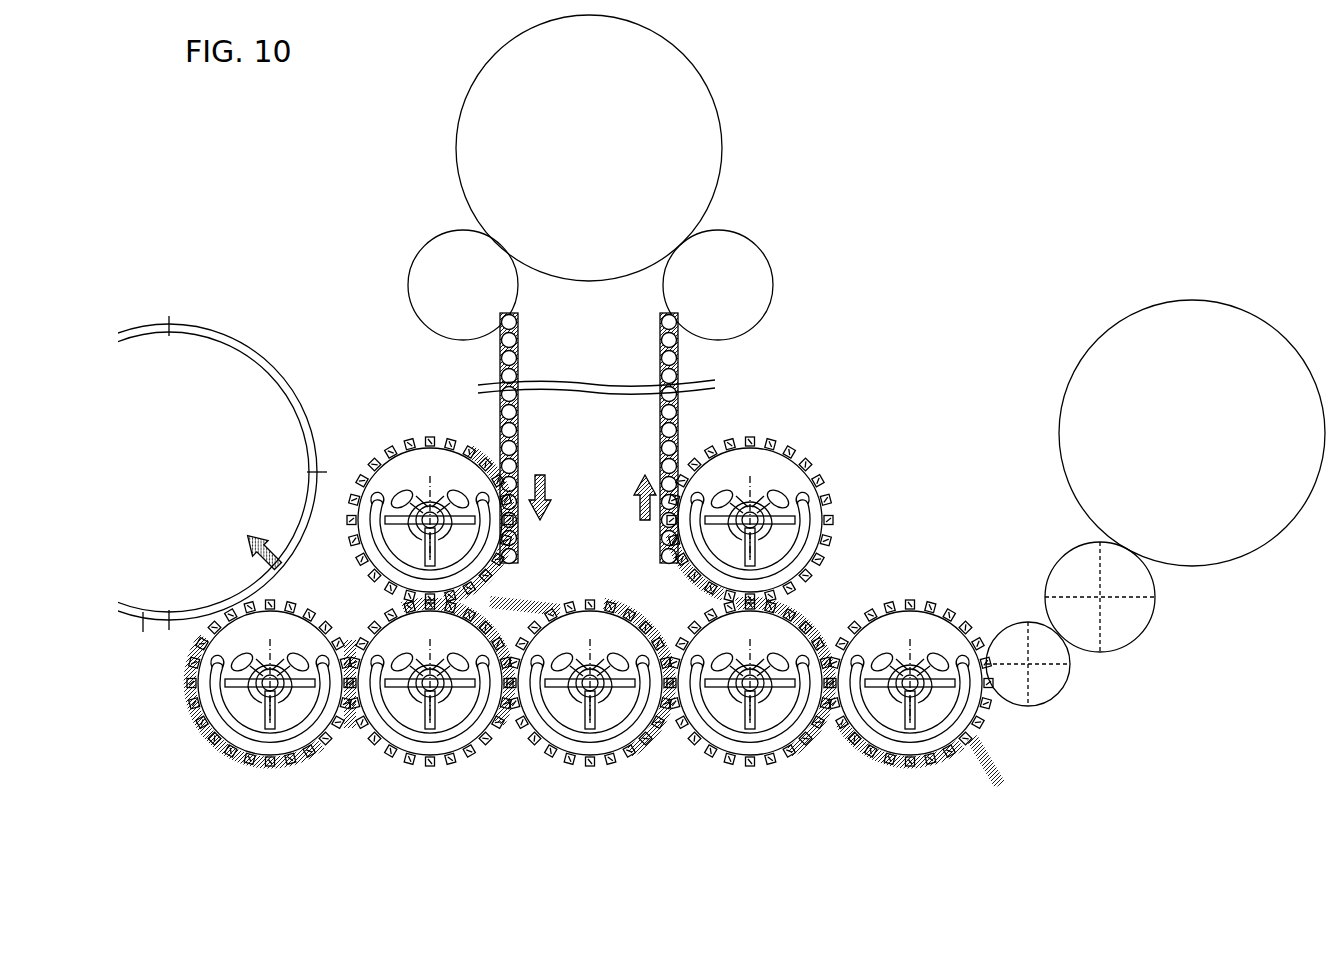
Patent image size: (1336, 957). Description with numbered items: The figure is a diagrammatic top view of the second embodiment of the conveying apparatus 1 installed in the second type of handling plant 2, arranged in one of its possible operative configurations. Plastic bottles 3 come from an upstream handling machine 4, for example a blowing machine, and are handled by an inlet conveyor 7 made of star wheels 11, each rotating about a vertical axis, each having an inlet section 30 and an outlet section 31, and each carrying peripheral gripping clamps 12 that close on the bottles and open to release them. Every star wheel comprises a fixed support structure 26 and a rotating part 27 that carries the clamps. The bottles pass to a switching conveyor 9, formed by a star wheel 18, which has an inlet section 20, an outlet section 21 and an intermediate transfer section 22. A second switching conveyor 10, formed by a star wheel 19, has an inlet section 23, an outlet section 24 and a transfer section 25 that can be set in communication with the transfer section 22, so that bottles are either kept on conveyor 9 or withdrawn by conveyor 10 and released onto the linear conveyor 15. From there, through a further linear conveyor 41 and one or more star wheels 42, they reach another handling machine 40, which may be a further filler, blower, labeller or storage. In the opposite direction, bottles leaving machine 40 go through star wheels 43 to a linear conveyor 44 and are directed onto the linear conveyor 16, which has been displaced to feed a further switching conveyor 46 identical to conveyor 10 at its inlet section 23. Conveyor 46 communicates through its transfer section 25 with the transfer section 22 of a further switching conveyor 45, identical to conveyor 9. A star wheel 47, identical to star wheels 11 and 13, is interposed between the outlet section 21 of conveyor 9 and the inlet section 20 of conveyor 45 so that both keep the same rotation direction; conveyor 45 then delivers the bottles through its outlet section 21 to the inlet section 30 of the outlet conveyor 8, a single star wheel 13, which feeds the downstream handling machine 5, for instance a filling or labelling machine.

The handling machine 40 is at (690, 120).
The star wheel 42 is at (415, 262).
The star wheel 43 is at (738, 248).
The linear conveyor 41 is at (520, 335).
The linear conveyor 44 is at (658, 335).
The plastic bottles 3 is at (520, 363).
The conveying apparatus 1 is at (596, 383).
The handling plant 2 is at (988, 205).
The upstream handling machine 4 is at (1205, 298).
The gripping clamps 12 is at (505, 470).
The fixed support structure 26 is at (437, 505).
The rotating part 27 is at (380, 455).
The inlet section 23 is at (518, 478).
The outlet section 24 is at (352, 530).
The switching conveyor 46 is at (425, 414).
The linear conveyor 16 is at (522, 412).
The linear conveyor 15 is at (658, 412).
The star wheel 19 is at (748, 442).
The switching conveyor 10 is at (848, 532).
The star wheel 13 is at (340, 590).
The transfer section 25 is at (482, 560).
The transfer section 22 is at (468, 628).
The outlet section 21 is at (350, 746).
The inlet section 20 is at (535, 750).
The switching conveyor 45 is at (505, 748).
The star wheel 47 is at (590, 768).
The switching conveyor 9 is at (748, 768).
The star wheel 18 is at (775, 772).
The outlet conveyor 8 is at (200, 746).
The inlet conveyor 7 is at (1004, 712).
The downstream handling machine 5 is at (166, 612).
The outlet section 31 is at (206, 690).
The inlet section 30 is at (1128, 556).
The star wheels 11 is at (1150, 632).